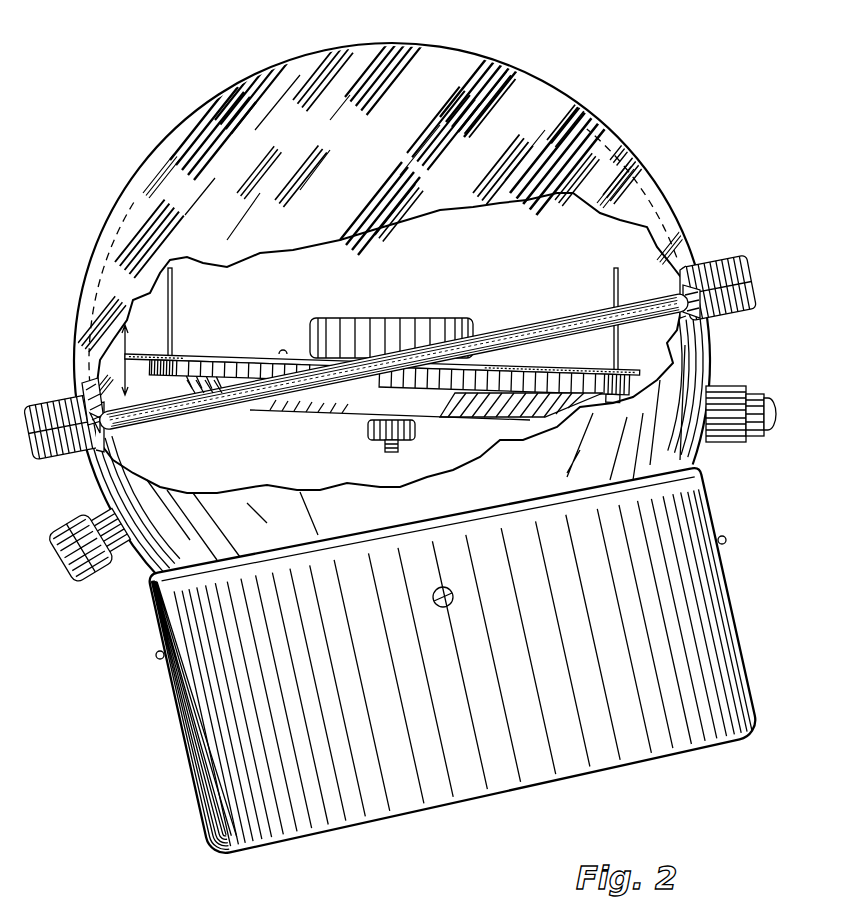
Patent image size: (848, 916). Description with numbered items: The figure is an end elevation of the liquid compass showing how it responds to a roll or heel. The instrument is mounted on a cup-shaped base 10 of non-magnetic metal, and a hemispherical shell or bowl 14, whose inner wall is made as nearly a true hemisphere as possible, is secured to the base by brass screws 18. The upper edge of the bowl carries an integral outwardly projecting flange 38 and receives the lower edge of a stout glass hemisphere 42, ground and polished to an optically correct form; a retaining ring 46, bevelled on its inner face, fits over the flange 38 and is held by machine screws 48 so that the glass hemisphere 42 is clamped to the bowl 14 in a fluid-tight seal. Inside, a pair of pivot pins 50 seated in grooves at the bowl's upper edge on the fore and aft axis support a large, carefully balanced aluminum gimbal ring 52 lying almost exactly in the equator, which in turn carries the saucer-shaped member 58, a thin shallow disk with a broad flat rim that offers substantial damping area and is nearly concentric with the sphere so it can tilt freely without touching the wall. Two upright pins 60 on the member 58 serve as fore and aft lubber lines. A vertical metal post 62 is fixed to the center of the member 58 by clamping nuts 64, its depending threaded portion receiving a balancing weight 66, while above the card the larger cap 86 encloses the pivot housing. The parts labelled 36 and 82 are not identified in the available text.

The cup-shaped base 10 is at (210, 785).
The hemispherical shell or bowl 14 is at (150, 572).
The brass screws 18 is at (158, 659).
The adjusting knob 36 is at (748, 444).
The outwardly projecting flange 38 is at (57, 452).
The glass hemisphere 42 is at (640, 190).
The retaining ring 46 is at (745, 267).
The machine screws 48 is at (50, 396).
The pivot pins 50 is at (683, 300).
The gimbal ring 52 is at (180, 428).
The saucer-shaped member 58 is at (658, 375).
The upright pins 60 is at (176, 284).
The vertical metal post 62 is at (393, 452).
The clamping nuts 64 is at (374, 420).
The balancing weight 66 is at (372, 430).
The pivot 82 is at (283, 354).
The larger cap 86 is at (343, 320).